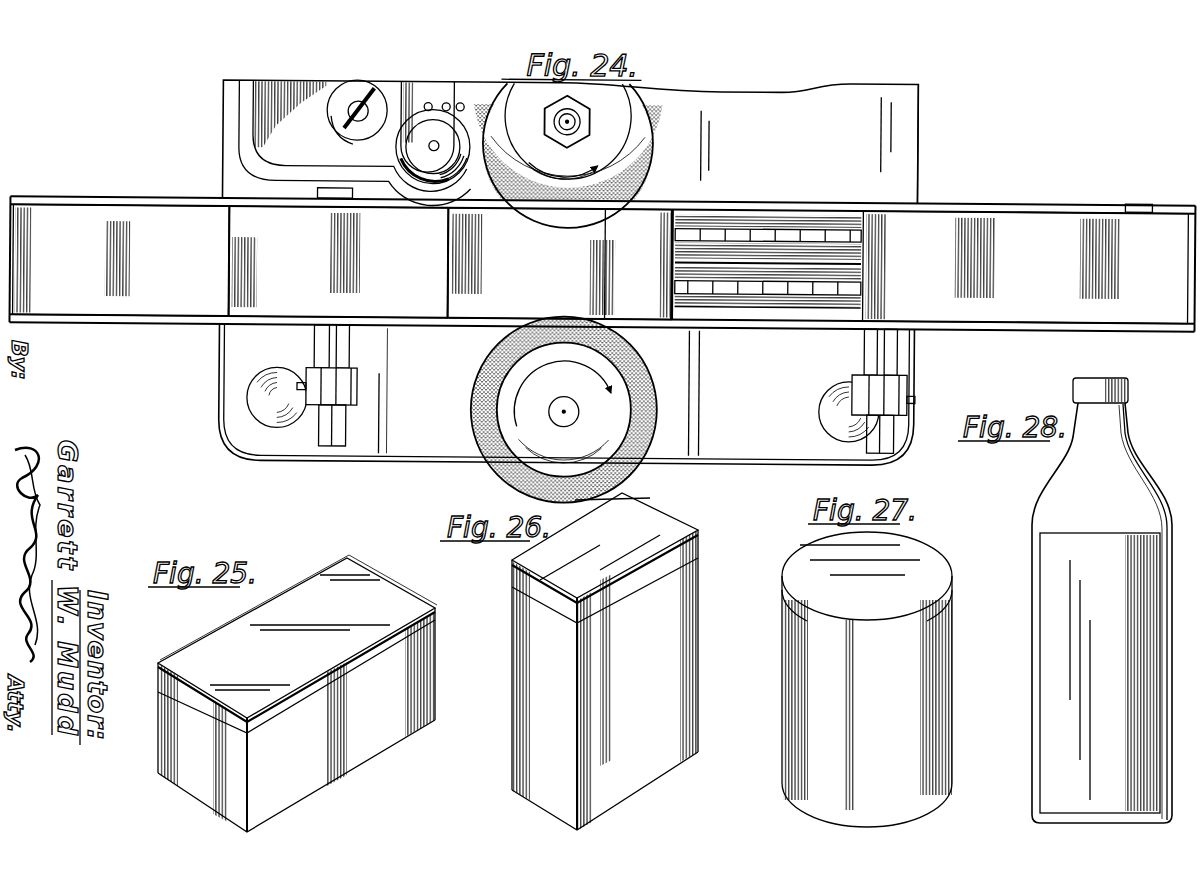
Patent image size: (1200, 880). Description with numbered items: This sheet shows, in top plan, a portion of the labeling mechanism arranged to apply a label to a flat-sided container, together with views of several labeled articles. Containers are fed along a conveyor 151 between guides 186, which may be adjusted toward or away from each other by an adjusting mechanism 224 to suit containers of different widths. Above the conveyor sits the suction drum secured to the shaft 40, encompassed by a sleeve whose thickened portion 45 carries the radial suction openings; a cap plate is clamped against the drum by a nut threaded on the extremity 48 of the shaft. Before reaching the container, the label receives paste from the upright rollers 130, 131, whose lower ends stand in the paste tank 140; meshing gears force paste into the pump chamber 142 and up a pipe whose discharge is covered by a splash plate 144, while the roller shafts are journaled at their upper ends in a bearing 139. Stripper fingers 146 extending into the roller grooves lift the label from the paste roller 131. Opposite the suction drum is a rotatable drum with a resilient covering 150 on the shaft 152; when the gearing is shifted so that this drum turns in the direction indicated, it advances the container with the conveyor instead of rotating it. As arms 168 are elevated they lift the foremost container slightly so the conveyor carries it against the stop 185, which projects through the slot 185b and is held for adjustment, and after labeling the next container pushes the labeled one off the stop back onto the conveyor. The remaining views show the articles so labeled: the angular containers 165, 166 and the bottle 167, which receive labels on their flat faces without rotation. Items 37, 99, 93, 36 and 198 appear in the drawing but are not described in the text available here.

In FIG. 24, the hopper wall 37 is at (903, 117).
In FIG. 24, the shaft 40 is at (695, 111).
In FIG. 24, the thickened portion 45 is at (700, 149).
In FIG. 24, the threaded extremity 48 is at (625, 136).
In FIG. 24, the shaft 99 is at (620, 107).
In FIG. 24, the stripper fingers 146 is at (540, 146).
In FIG. 24, the splash plate 144 is at (426, 98).
In FIG. 24, the bearing 139 is at (470, 59).
In FIG. 24, the roller 131 is at (447, 100).
In FIG. 24, the chamber 142 is at (352, 142).
In FIG. 24, the roller 130 is at (402, 157).
In FIG. 24, the tank 140 is at (278, 172).
In FIG. 24, the container 165 is at (662, 207).
In FIG. 25, the container 165 is at (353, 750).
In FIG. 24, the container 166 is at (375, 260).
In FIG. 26, the container 166 is at (520, 722).
In FIG. 24, the partition 93 is at (607, 212).
In FIG. 24, the arms 168 is at (815, 196).
In FIG. 24, the conveyor 151 is at (860, 237).
In FIG. 24, the stop 185 is at (672, 265).
In FIG. 24, the slot 185b is at (730, 270).
In FIG. 24, the guides 186 is at (293, 330).
In FIG. 24, the roller 36 is at (265, 390).
In FIG. 24, the adjusting mechanism 224 is at (415, 402).
In FIG. 24, the resilient surface 150 is at (472, 443).
In FIG. 24, the shaft 152 is at (585, 452).
In FIG. 27, the cylindrical container 198 is at (920, 572).
In FIG. 28, the container 167 is at (1030, 737).